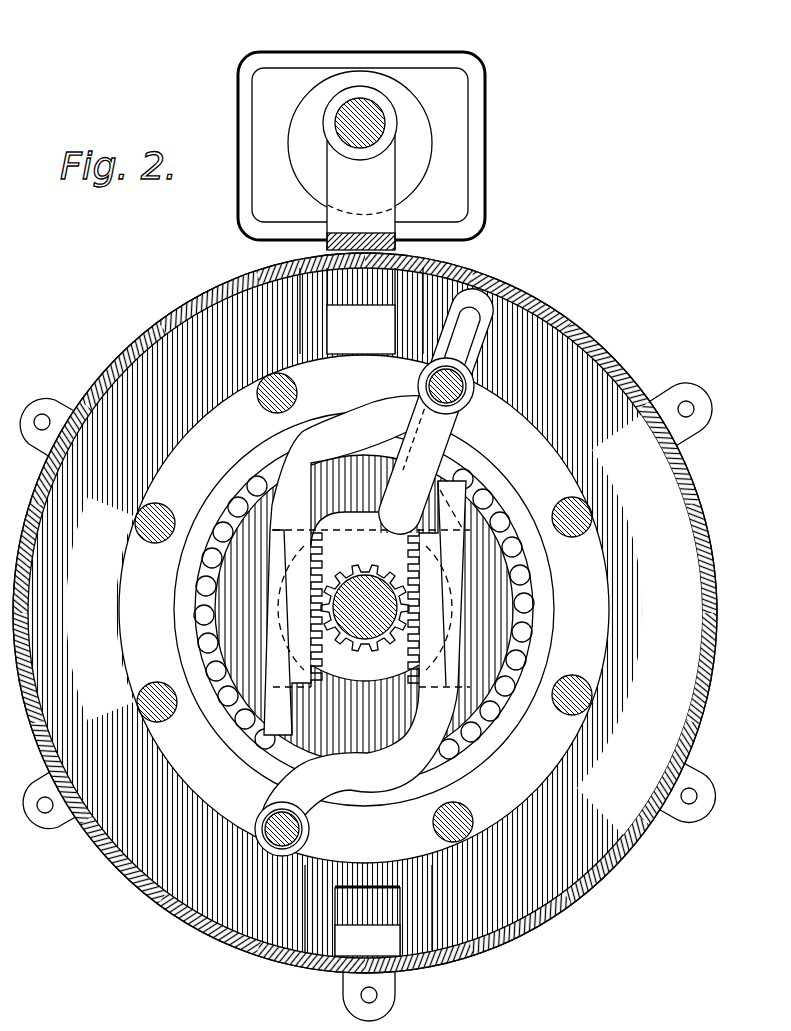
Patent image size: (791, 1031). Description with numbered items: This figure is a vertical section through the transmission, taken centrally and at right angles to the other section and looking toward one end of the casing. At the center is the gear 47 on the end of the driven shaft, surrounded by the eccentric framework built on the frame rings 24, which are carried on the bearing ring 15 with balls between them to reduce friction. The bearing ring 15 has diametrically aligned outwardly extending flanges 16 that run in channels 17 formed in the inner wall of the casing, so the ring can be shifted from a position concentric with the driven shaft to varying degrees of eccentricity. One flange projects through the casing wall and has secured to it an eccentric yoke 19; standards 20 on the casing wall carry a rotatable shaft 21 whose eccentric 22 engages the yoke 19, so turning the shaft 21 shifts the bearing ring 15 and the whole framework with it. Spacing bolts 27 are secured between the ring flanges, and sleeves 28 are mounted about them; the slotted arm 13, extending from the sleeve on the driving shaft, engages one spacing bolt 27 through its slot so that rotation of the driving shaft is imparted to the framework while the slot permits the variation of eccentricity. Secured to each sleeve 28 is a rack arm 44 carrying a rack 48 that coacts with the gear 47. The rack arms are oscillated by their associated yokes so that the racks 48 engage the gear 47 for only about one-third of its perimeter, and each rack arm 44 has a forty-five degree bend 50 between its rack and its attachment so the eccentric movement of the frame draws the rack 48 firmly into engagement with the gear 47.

The slotted arm 13 is at (503, 357).
The bearing ring 15 is at (477, 710).
The flange 16 is at (356, 332).
The channel 17 is at (323, 345).
The eccentric yoke 19 is at (484, 111).
The standard 20 is at (372, 96).
The shaft 21 is at (355, 108).
The eccentric 22 is at (420, 168).
The frame ring 24 is at (585, 565).
The spacing bolt 27 is at (263, 418).
The sleeve 28 is at (423, 383).
The rack arm 44 is at (393, 445).
The gear 47 is at (366, 645).
The rack 48 is at (415, 557).
The bend 50 is at (323, 447).